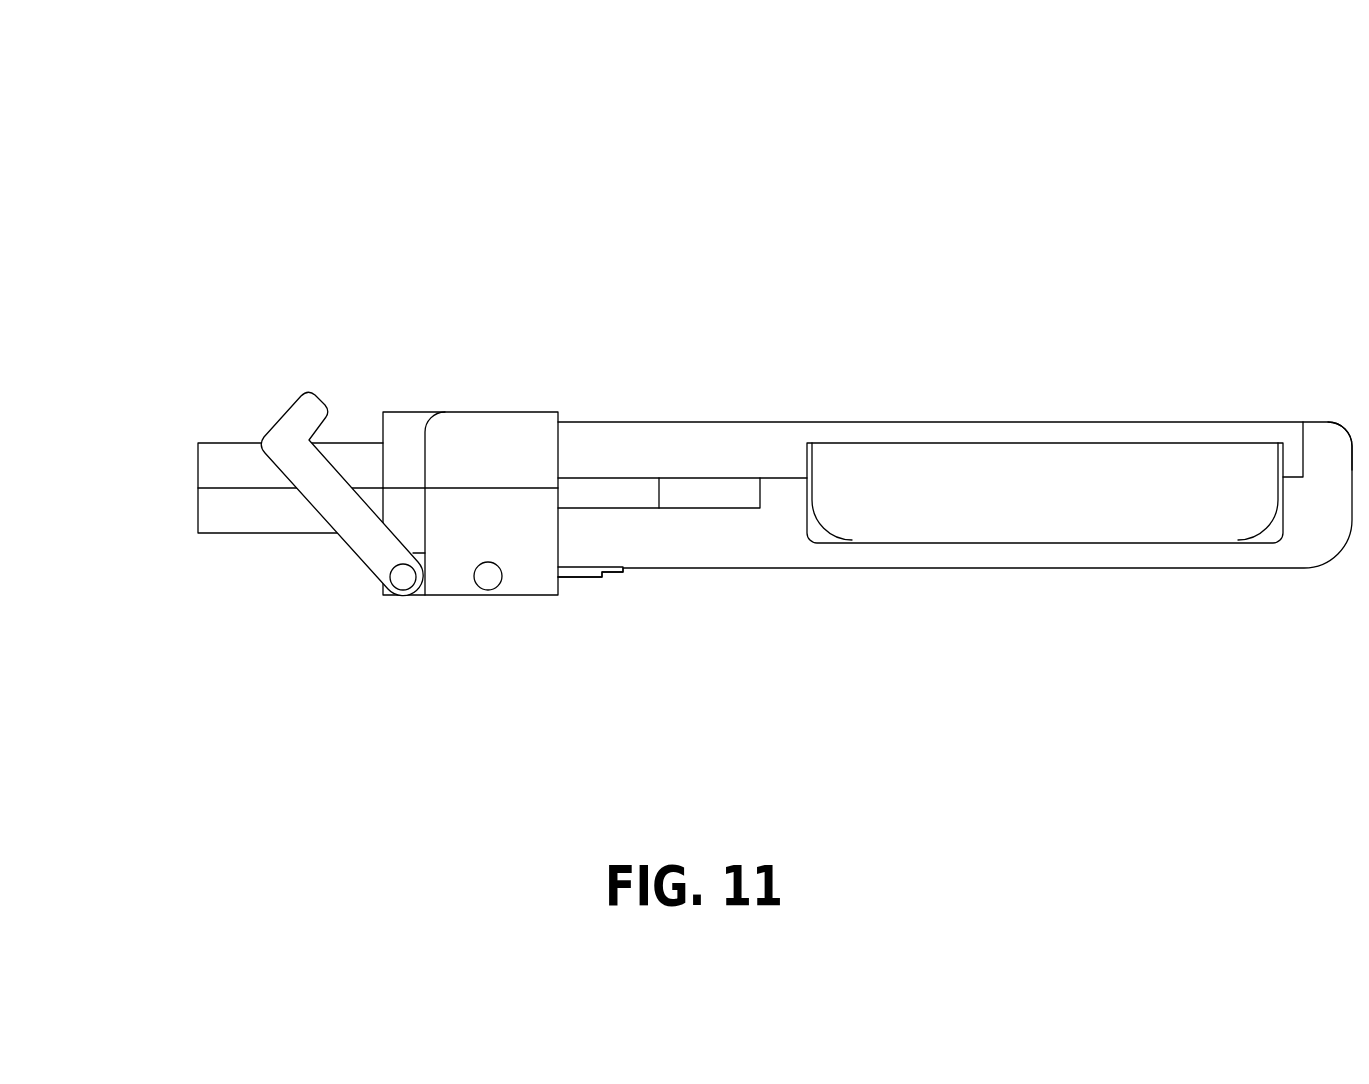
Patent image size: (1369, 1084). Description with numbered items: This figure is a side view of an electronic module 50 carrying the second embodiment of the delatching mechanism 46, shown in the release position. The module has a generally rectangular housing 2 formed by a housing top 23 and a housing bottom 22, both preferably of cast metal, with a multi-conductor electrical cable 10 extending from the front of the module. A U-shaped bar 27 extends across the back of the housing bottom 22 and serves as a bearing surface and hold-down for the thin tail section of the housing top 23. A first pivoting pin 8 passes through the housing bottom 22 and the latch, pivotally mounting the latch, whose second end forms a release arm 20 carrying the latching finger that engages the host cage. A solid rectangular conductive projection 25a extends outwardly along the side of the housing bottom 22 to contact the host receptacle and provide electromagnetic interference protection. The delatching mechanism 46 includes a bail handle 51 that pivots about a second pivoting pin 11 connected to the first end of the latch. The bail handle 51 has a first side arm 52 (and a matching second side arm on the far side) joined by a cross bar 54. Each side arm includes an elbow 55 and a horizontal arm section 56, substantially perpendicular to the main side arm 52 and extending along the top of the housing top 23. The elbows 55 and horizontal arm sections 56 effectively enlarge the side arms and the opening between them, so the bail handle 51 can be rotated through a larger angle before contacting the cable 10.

The housing 2 is at (993, 408).
The first pivoting pin 8 is at (488, 590).
The multi-conductor cable 10 is at (198, 466).
The second pivoting pin 11 is at (403, 590).
The release arm 20 is at (582, 577).
The housing bottom 22 is at (870, 555).
The housing top 23 is at (845, 432).
The solid rectangular conductive projection 25a is at (634, 493).
The U-shaped bar 27 is at (1325, 420).
The delatching mechanism 46 is at (357, 597).
The electronic module 50 is at (656, 300).
The bail handle 51 is at (268, 470).
The first side arm 52 is at (330, 507).
The cross bar 54 is at (322, 402).
The elbow 55 is at (280, 437).
The horizontal arm section 56 is at (287, 408).